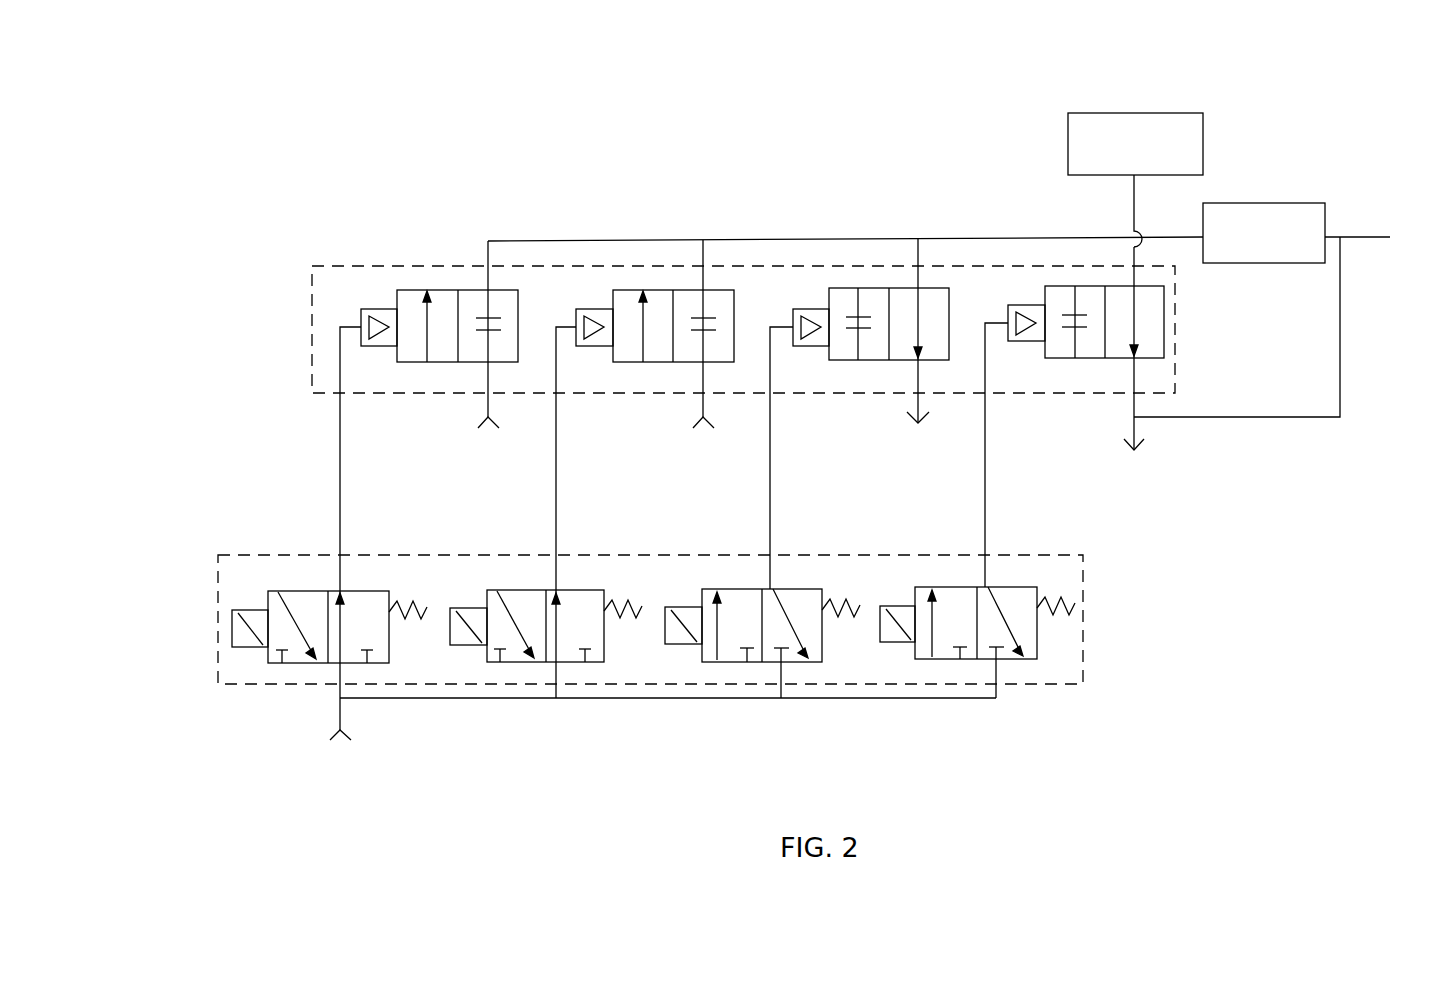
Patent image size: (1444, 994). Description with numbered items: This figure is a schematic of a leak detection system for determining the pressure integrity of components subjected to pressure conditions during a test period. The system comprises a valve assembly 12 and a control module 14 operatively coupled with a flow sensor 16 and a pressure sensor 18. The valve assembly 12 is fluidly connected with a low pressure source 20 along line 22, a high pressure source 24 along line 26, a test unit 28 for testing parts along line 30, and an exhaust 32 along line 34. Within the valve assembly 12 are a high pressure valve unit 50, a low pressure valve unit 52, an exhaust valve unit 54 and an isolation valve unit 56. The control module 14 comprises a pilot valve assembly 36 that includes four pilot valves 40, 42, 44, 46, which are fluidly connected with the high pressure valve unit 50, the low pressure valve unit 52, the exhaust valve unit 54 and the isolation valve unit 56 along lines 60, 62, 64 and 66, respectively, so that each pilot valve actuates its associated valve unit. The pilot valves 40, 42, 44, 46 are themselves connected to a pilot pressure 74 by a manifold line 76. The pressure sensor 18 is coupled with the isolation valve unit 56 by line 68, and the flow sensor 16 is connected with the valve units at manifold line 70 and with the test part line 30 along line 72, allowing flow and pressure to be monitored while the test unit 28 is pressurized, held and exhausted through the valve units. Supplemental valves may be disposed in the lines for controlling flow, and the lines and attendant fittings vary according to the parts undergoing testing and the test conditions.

The valve assembly 12 is at (310, 297).
The control module 14 is at (598, 690).
The flow sensor 16 is at (1285, 203).
The pressure sensor 18 is at (1145, 113).
The low pressure source 20 is at (653, 467).
The line 22 is at (703, 382).
The high pressure source 24 is at (430, 455).
The line 26 is at (488, 383).
The test unit 28 is at (1230, 513).
The line 30 is at (1134, 427).
The exhaust 32 is at (895, 448).
The line 34 is at (912, 383).
The pilot valve assembly 36 is at (218, 590).
The pilot valve 40 is at (362, 591).
The pilot valve 42 is at (557, 590).
The pilot valve 44 is at (795, 589).
The pilot valve 46 is at (1003, 587).
The high pressure valve unit 50 is at (442, 290).
The low pressure valve unit 52 is at (655, 290).
The exhaust valve unit 54 is at (870, 288).
The isolation valve unit 56 is at (1068, 286).
The line 60 is at (338, 461).
The line 62 is at (556, 481).
The line 64 is at (770, 487).
The line 66 is at (985, 483).
The line 68 is at (1134, 200).
The manifold line 70 is at (624, 238).
The line 72 is at (1340, 372).
The pilot pressure 74 is at (290, 757).
The manifold line 76 is at (462, 698).